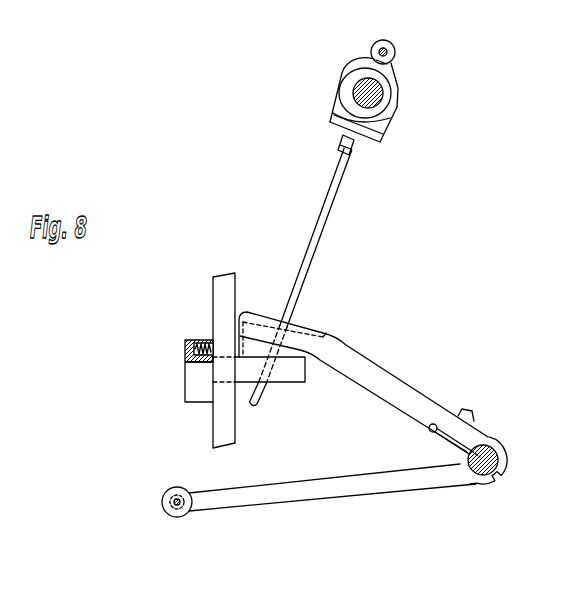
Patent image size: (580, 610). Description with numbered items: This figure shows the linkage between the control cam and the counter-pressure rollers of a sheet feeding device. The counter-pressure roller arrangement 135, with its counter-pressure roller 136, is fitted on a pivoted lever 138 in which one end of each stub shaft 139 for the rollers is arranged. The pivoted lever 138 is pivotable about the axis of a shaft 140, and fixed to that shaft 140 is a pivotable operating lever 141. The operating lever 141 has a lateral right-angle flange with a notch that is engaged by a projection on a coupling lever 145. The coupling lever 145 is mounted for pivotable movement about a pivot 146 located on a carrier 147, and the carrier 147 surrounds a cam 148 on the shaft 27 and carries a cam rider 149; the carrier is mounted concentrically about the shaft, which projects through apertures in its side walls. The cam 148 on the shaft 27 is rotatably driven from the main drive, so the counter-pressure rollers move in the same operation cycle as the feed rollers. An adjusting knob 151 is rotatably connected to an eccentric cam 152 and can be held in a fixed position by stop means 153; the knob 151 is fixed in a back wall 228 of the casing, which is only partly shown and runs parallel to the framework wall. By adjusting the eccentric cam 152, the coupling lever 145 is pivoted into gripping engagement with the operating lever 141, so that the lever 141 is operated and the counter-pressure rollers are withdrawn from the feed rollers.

The shaft 27 is at (382, 98).
The counter-pressure roller arrangement 135 is at (162, 517).
The counter-pressure roller 136 is at (185, 512).
The pivoted lever 138 is at (280, 494).
The stub shaft 139 is at (177, 506).
The shaft 140 is at (477, 478).
The pivotable operating lever 141 is at (345, 358).
The coupling lever 145 is at (325, 208).
The pivot 146 is at (340, 143).
The carrier 147 is at (389, 68).
The cam 148 is at (350, 82).
The cam rider 149 is at (393, 45).
The adjusting knob 151 is at (196, 369).
The eccentric cam 152 is at (273, 378).
The stop means 153 is at (202, 340).
The wall 228 is at (223, 288).